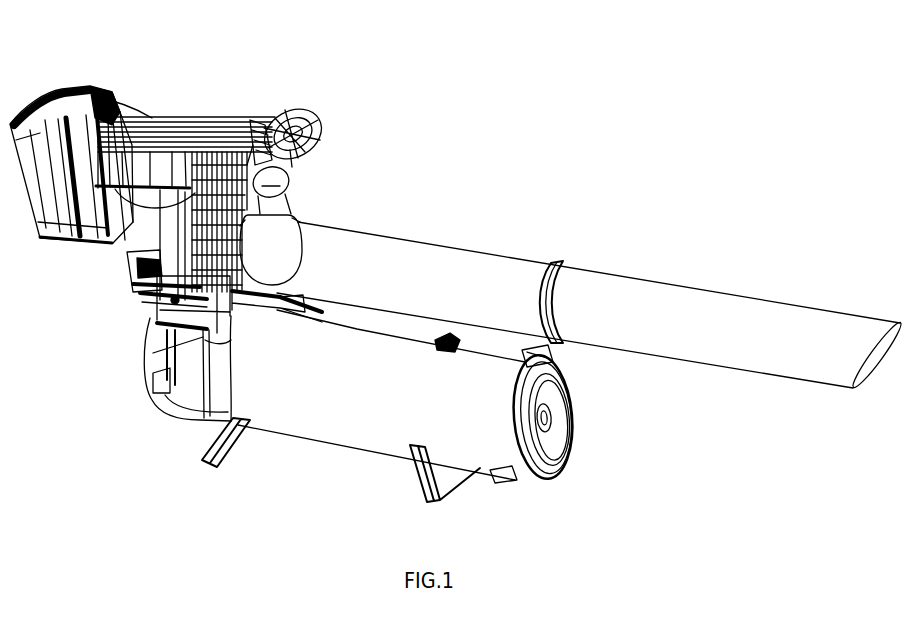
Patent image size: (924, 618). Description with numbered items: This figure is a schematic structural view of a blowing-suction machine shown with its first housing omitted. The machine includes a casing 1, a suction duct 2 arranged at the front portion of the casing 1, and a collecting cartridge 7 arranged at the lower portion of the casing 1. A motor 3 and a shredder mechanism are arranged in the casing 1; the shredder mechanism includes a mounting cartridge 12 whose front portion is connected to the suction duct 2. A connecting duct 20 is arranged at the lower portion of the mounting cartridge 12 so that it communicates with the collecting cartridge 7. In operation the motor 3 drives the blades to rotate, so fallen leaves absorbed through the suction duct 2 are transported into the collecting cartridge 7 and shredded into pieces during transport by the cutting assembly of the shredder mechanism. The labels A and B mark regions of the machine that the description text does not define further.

The battery pack A is at (116, 98).
The casing 1 is at (290, 193).
The air intake connection region B is at (290, 262).
The suction duct 2 is at (493, 295).
The motor 3 is at (155, 265).
The mounting cartridge 12 is at (150, 297).
The connecting duct 20 is at (153, 347).
The collecting cartridge 7 is at (347, 423).